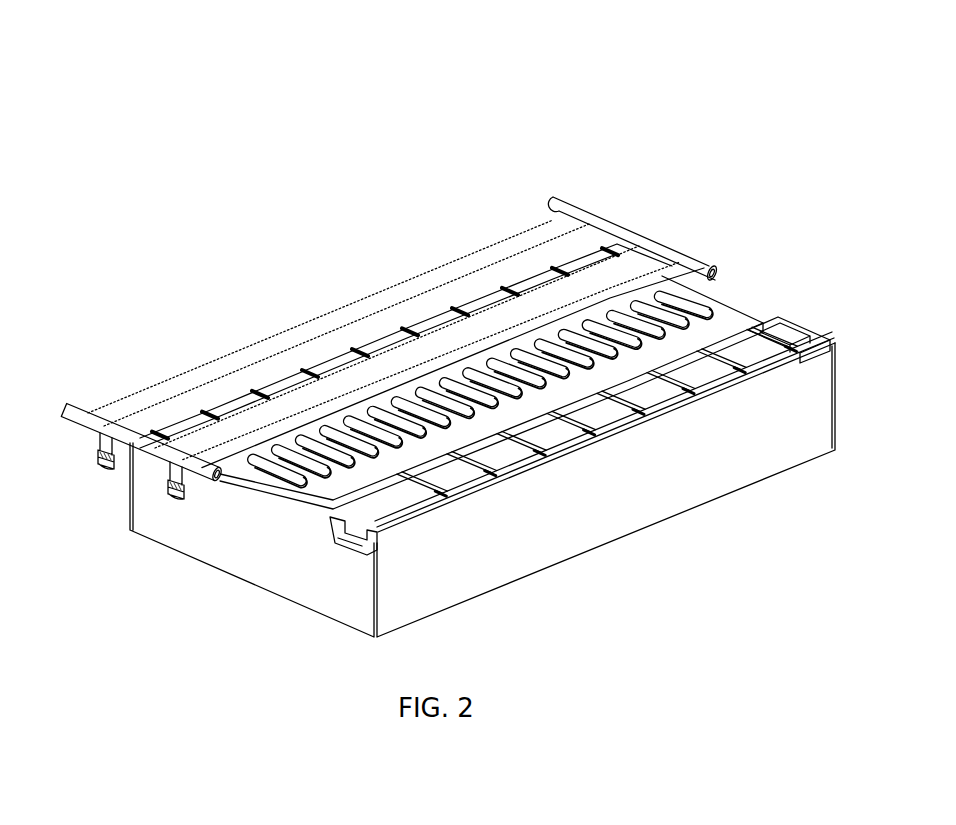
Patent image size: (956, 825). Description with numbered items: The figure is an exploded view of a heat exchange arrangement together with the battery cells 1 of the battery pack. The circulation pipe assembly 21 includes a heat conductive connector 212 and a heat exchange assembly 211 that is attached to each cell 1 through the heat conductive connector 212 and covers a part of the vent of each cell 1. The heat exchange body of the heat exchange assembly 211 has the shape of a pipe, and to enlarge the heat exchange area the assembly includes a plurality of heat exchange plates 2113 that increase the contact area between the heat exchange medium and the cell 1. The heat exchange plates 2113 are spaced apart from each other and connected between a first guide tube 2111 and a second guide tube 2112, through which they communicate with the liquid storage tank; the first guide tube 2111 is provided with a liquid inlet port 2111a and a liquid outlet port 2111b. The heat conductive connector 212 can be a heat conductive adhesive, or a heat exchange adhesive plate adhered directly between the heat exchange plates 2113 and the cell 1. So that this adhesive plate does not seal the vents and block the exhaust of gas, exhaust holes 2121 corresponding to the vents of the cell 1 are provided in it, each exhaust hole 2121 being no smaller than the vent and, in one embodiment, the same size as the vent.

The cell 1 is at (752, 355).
The circulation pipe assembly 21 is at (727, 148).
The heat exchange assembly 211 is at (320, 217).
The first guide tube 2111 is at (83, 417).
The liquid inlet port 2111a is at (103, 466).
The liquid outlet port 2111b is at (180, 497).
The second guide tube 2112 is at (555, 218).
The heat exchange plate 2113 is at (270, 368).
The heat conductive connector 212 is at (724, 314).
The exhaust hole 2121 is at (435, 418).